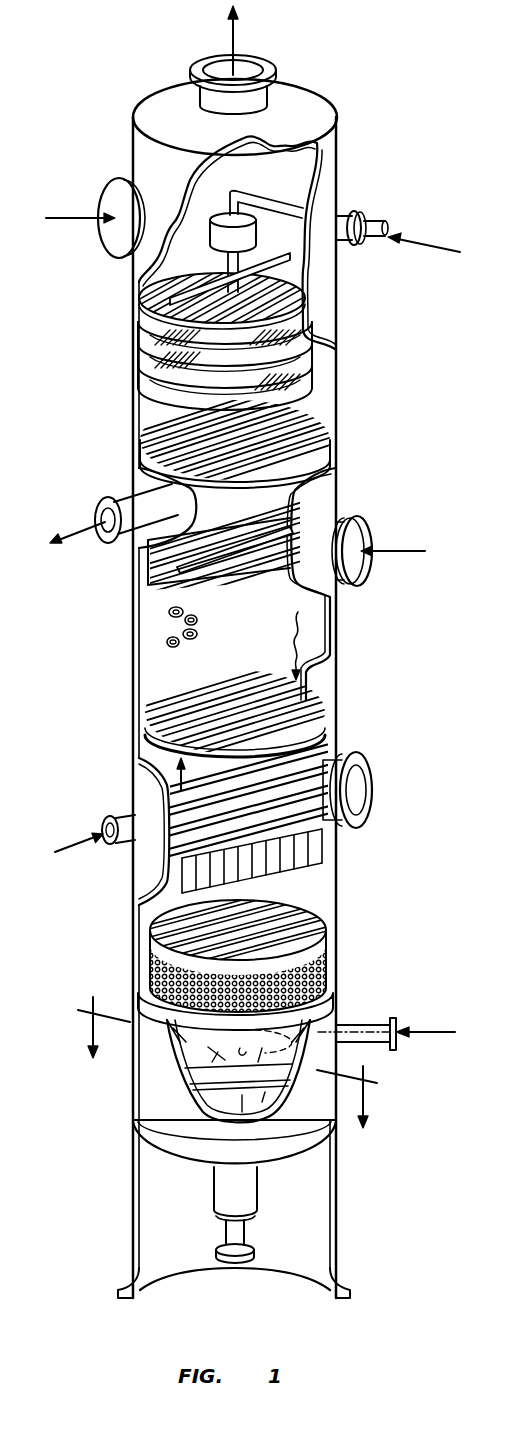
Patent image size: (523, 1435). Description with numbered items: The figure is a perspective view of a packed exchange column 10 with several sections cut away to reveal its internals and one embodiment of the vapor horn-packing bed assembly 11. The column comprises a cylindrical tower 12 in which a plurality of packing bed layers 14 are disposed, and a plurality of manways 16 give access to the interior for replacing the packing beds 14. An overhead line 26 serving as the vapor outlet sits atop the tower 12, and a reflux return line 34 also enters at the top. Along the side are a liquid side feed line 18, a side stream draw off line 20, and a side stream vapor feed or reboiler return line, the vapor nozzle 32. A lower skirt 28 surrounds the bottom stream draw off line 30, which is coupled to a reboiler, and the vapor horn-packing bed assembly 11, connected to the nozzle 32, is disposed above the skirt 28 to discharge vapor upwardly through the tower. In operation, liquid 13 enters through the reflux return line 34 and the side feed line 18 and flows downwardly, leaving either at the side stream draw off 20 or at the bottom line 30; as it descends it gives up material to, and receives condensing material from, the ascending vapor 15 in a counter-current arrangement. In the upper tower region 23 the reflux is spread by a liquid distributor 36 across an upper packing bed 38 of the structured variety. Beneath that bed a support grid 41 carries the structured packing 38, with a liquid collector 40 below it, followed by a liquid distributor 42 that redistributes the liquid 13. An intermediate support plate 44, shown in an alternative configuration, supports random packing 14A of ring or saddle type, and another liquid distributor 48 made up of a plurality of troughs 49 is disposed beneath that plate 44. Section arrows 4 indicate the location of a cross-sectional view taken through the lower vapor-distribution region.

The exchange column 10 is at (350, 111).
The vapor horn-packing bed assembly 11 is at (205, 1052).
The cylindrical tower 12 is at (330, 159).
The liquid 13 is at (414, 243).
The packing bed layers 14 is at (318, 360).
The random packing 14A is at (150, 643).
The ascending vapor 15 is at (237, 43).
The manways 16 is at (100, 203).
The liquid side feed line 18 is at (120, 815).
The side stream draw off line 20 is at (120, 498).
The upper tower region 23 is at (128, 364).
The overhead line 26 is at (266, 62).
The lower skirt 28 is at (330, 1243).
The bottom stream draw off line 30 is at (262, 1196).
The vapor nozzle 32 is at (363, 1024).
The reflux return line 34 is at (343, 216).
The liquid distributor 36 is at (140, 288).
The upper packing bed 38 is at (133, 355).
The liquid collector 40 is at (330, 443).
The support grid 41 is at (320, 390).
The liquid distributor 42 is at (150, 575).
The intermediate support plate 44 is at (145, 702).
The liquid distributor 48 is at (327, 858).
The troughs 49 is at (327, 872).
The section line 4- 4 is at (228, 1053).